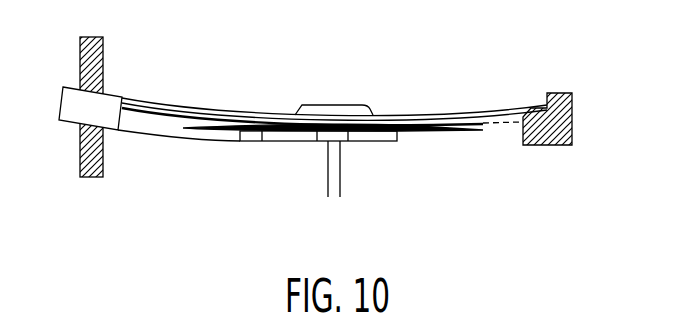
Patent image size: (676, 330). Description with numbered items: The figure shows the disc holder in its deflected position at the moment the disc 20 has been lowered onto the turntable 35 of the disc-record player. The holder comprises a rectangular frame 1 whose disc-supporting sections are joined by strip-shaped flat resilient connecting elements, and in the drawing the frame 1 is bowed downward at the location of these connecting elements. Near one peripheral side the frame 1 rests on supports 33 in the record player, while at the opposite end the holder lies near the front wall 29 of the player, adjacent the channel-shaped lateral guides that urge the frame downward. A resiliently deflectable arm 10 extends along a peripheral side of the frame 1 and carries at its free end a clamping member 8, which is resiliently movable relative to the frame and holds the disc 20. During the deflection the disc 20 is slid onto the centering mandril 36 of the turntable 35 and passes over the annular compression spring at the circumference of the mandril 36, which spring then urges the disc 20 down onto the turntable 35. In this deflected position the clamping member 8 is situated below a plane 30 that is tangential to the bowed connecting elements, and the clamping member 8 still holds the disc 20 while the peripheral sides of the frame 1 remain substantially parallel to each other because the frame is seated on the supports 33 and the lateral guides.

The rectangular frame 1 is at (450, 100).
The clamping member 8 is at (327, 138).
The resiliently deflectable arm 10 is at (147, 120).
The disc 20 is at (462, 130).
The front wall 29 is at (93, 60).
The plane 30 is at (485, 122).
The supports 33 is at (557, 130).
The turntable 35 is at (382, 141).
The centering mandril 36 is at (352, 113).